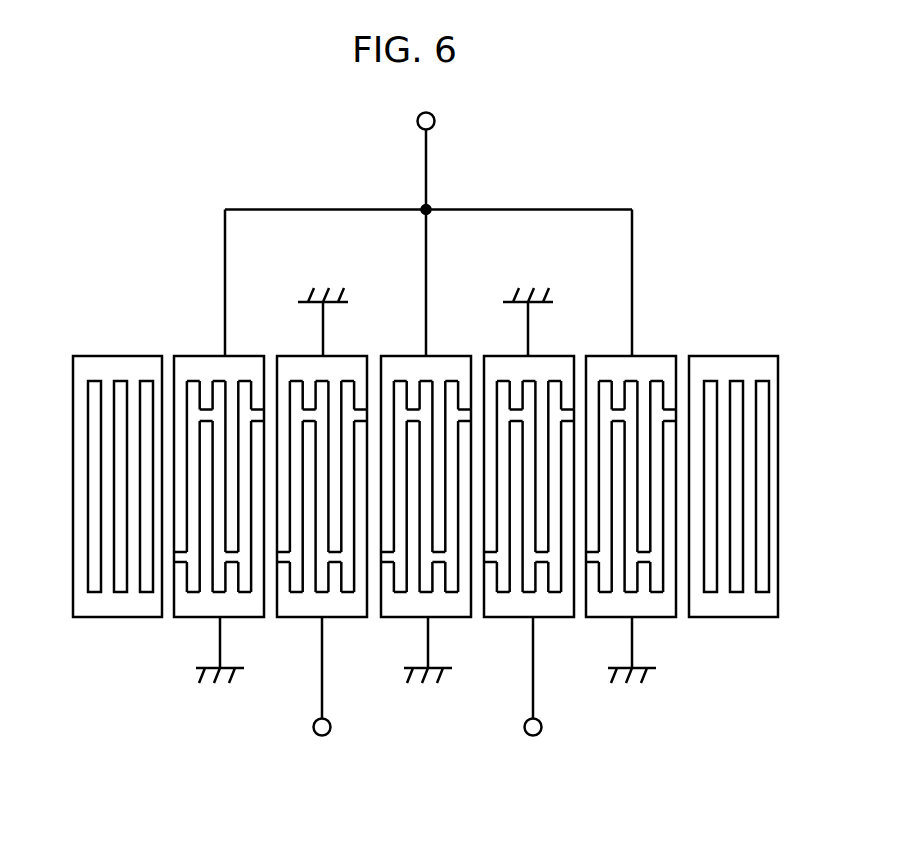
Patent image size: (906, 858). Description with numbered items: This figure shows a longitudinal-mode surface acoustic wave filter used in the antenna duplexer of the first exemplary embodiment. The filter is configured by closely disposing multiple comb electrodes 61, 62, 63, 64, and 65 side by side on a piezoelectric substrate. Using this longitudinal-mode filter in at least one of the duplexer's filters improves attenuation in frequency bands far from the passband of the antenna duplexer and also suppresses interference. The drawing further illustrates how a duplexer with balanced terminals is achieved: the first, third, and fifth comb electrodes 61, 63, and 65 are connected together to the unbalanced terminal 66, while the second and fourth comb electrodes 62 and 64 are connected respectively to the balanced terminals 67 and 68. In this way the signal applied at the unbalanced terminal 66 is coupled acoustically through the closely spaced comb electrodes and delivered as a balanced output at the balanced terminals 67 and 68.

The comb electrode 61 is at (237, 617).
The comb electrode 62 is at (335, 617).
The comb electrode 63 is at (447, 617).
The comb electrode 64 is at (550, 617).
The comb electrode 65 is at (663, 617).
The unbalanced terminal 66 is at (415, 119).
The balanced terminal 67 is at (328, 736).
The balanced terminal 68 is at (540, 736).